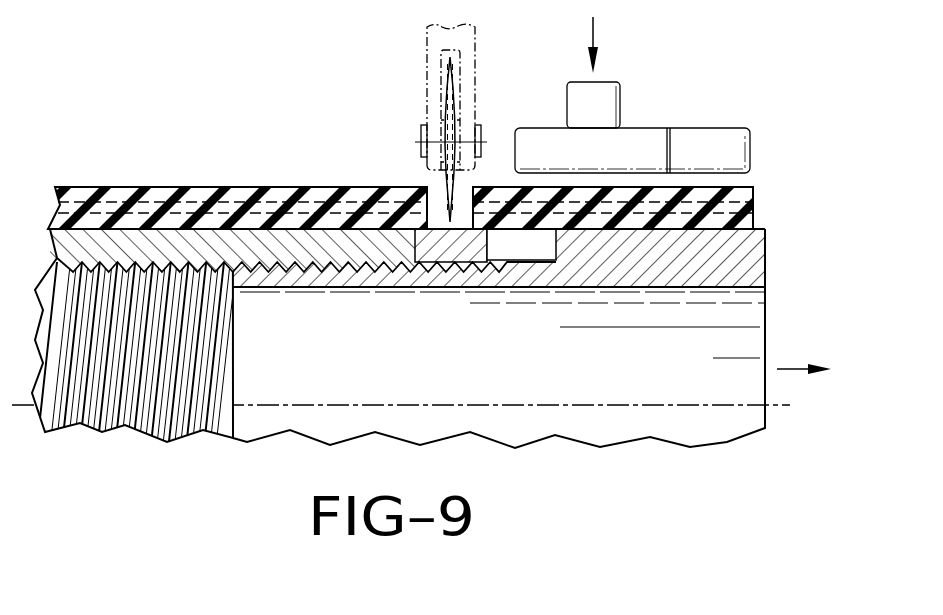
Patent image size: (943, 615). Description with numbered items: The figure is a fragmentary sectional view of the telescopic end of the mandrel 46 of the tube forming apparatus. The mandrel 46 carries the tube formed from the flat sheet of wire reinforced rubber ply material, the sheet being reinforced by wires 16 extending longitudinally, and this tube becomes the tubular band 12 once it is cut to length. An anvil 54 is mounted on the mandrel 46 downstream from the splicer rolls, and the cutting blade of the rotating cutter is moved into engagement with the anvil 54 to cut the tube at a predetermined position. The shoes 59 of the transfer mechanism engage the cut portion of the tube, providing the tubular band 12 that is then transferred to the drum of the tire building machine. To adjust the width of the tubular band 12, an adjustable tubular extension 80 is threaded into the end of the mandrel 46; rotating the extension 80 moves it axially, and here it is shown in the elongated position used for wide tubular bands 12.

The tubular band 12 is at (442, 159).
The wires 16 is at (198, 185).
The mandrel 46 is at (300, 245).
The anvil 54 is at (440, 245).
The shoes 59 is at (700, 142).
The adjustable tubular extension 80 is at (728, 263).